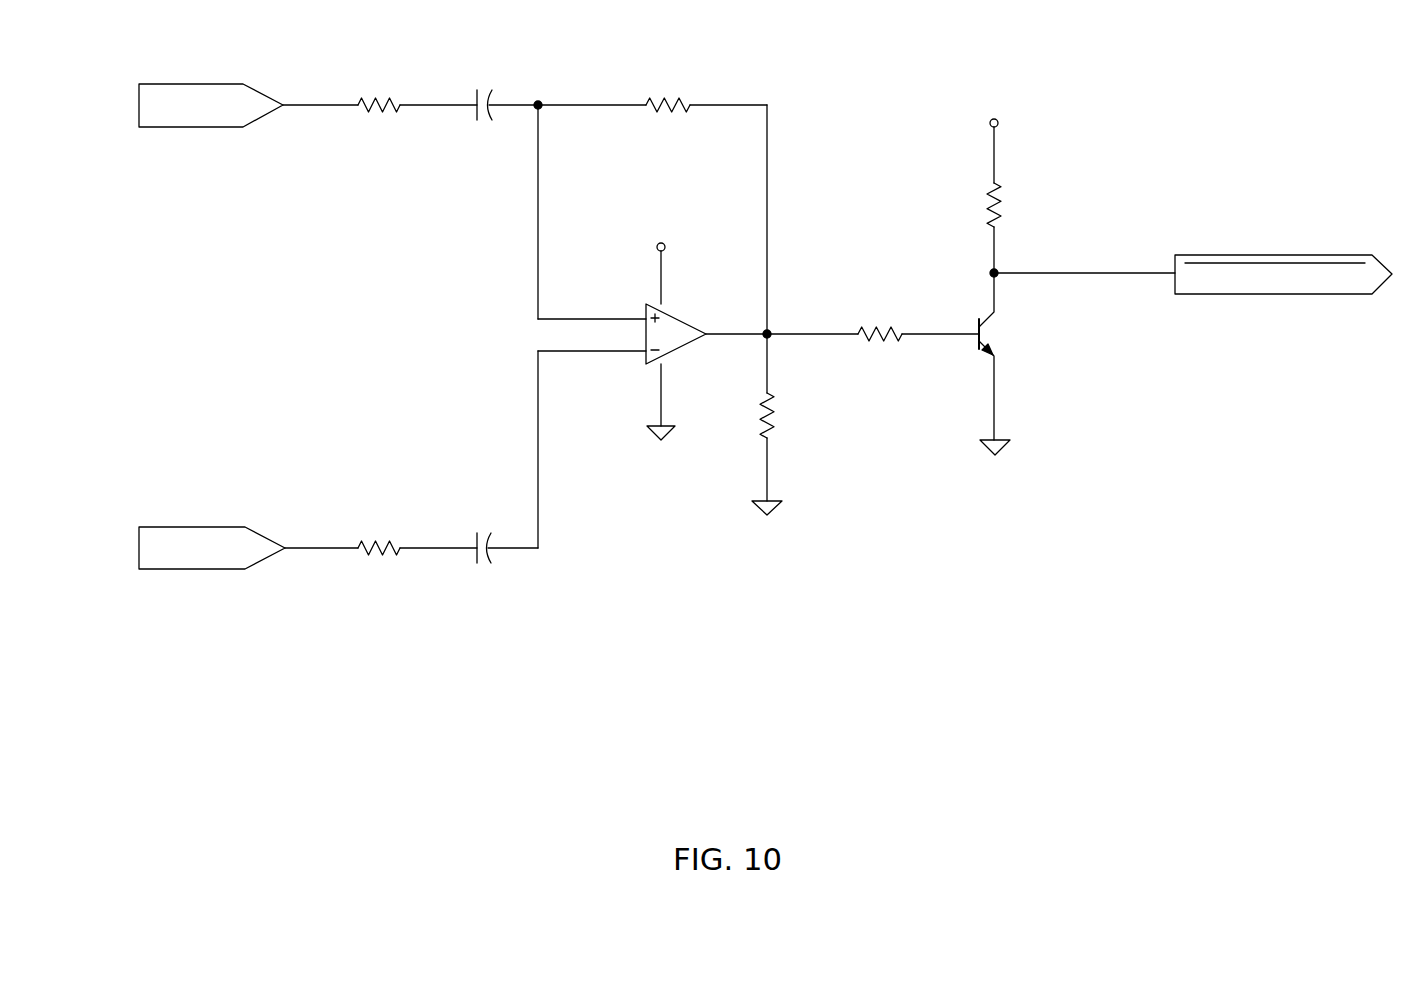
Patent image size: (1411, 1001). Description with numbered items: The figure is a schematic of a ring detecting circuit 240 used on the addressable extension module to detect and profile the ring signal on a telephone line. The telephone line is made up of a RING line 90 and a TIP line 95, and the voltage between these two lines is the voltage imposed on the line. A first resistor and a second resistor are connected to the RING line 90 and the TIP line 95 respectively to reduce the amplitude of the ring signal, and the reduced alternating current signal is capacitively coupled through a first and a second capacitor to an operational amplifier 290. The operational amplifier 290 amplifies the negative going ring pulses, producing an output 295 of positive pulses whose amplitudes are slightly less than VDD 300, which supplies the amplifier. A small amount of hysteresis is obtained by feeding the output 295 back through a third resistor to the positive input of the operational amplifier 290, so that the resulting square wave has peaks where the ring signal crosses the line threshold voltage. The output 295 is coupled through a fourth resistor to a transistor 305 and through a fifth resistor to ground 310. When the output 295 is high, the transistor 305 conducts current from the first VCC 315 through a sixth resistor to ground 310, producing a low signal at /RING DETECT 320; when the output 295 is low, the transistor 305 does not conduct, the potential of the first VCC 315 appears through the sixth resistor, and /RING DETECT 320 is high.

The ring detecting circuit 240 is at (710, 705).
The TIP line 95 is at (203, 84).
The RING line 90 is at (203, 569).
The operational amplifier 290 is at (646, 313).
The VDD 300 is at (657, 243).
The output 295 is at (742, 311).
The ground 310 is at (995, 457).
The transistor 305 is at (993, 350).
The first VCC 315 is at (998, 126).
The /RING DETECT 320 is at (1298, 253).